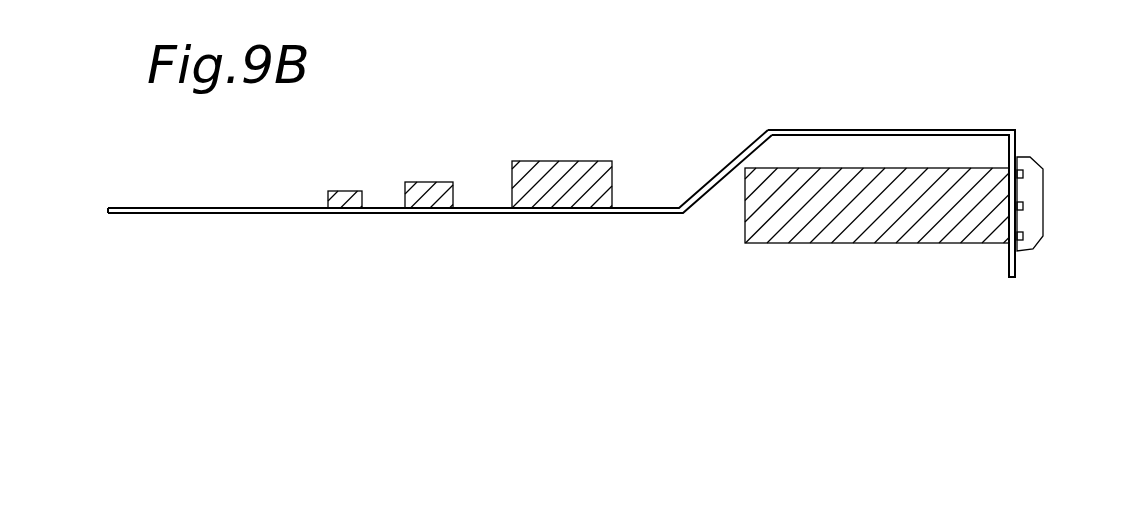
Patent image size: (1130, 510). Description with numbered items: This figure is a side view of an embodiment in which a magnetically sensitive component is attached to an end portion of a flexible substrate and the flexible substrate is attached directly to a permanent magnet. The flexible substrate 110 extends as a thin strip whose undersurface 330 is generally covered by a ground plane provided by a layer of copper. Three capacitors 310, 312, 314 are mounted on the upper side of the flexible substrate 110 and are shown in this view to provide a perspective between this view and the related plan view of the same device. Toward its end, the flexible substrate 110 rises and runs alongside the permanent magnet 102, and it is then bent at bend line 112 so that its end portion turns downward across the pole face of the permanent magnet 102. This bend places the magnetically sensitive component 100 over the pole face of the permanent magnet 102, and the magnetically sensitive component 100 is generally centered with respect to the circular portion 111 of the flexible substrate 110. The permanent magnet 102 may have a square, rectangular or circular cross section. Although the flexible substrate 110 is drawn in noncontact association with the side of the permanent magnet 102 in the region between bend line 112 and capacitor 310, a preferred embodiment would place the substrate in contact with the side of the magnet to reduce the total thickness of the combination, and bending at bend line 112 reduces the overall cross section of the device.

The flexible substrate 110 is at (172, 208).
The capacitor 314 is at (343, 190).
The capacitor 312 is at (428, 181).
The capacitor 310 is at (567, 160).
The undersurface of the flexible substrate 330 is at (650, 214).
The permanent magnet 102 is at (809, 243).
The bend line 112 is at (1014, 131).
The magnetically sensitive component 100 is at (1036, 196).
The circular portion of the flexible substrate 111 is at (1016, 266).